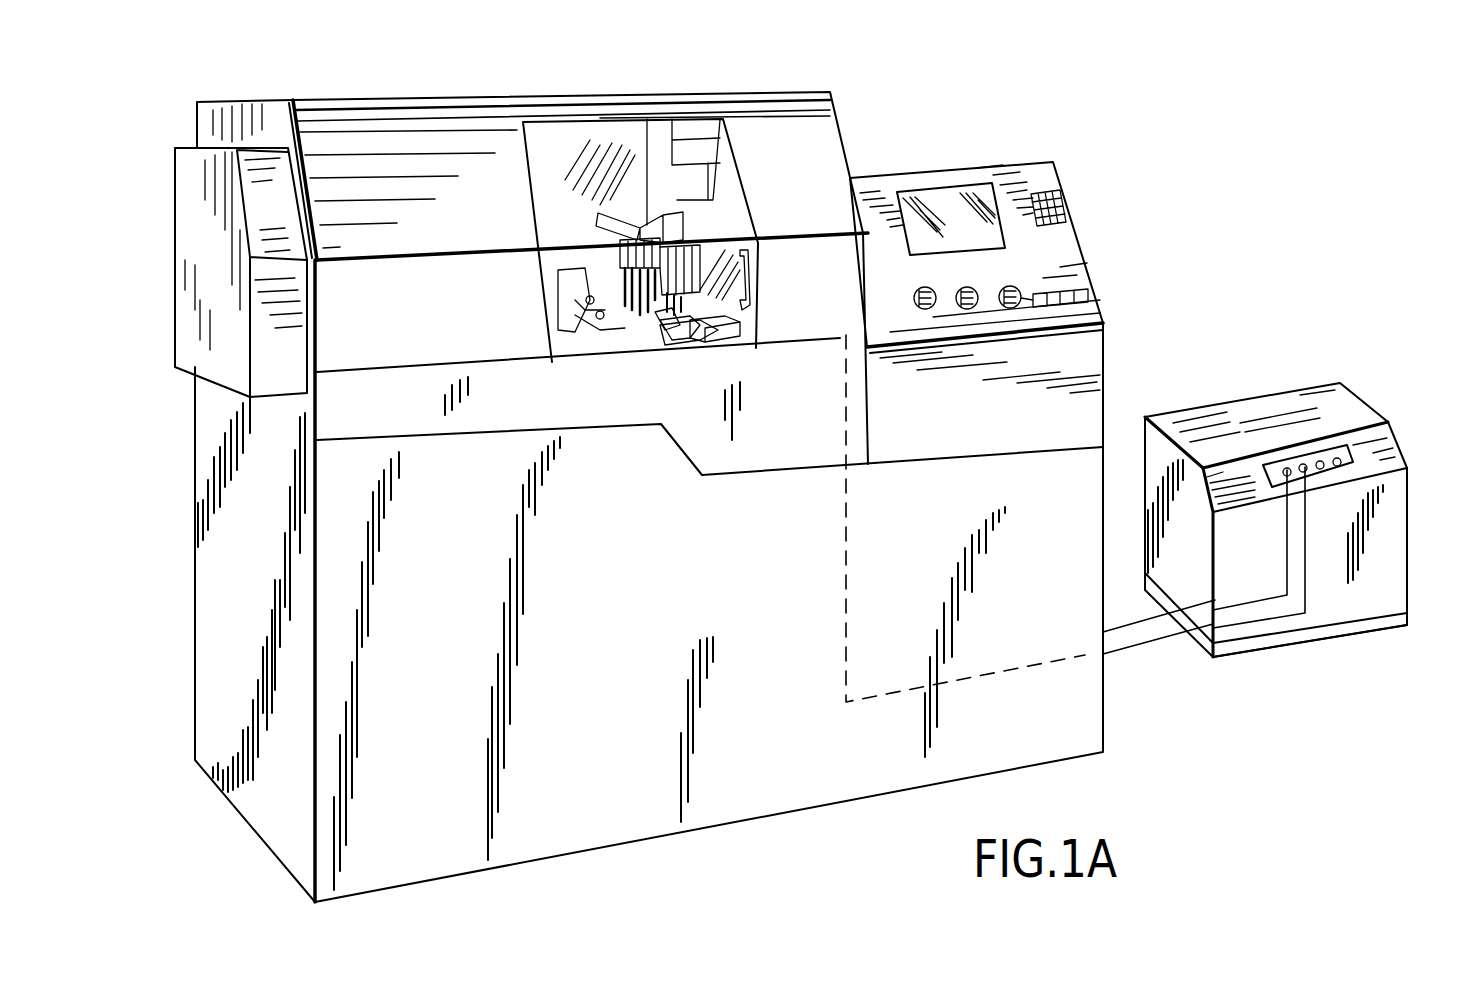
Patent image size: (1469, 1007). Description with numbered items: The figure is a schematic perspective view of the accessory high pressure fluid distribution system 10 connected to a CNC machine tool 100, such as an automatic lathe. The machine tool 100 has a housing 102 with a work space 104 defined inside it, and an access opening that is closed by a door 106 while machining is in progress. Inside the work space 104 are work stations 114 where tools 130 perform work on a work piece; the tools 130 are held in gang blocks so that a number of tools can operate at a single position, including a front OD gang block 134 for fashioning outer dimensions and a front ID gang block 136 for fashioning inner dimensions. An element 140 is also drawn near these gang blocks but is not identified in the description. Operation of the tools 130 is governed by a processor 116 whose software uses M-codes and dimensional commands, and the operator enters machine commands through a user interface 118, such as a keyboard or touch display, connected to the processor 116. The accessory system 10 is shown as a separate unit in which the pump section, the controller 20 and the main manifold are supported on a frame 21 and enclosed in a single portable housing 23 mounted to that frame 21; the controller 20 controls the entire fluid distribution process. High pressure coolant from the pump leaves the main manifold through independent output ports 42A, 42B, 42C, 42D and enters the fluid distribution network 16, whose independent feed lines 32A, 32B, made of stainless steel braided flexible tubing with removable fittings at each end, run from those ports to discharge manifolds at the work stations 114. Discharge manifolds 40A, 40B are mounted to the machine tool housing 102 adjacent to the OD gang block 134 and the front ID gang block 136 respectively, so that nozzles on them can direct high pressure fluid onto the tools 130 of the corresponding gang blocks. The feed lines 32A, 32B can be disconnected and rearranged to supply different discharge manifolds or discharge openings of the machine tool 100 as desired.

The CNC machine tool 100 is at (203, 587).
The housing 102 is at (409, 113).
The work space 104 is at (552, 170).
The door 106 is at (718, 178).
The feed line 32A is at (620, 245).
The feed line 32B is at (850, 510).
The discharge manifold 40A is at (665, 243).
The front OD gang block 134 is at (697, 263).
The work station 114 is at (590, 234).
The tools 130 is at (612, 318).
The reagent station 140 is at (663, 313).
The front ID gang block 136 is at (660, 325).
The discharge manifold 40B is at (690, 342).
The user interface 118 is at (953, 197).
The processor 116 is at (1018, 265).
The accessory high pressure fluid distribution system 10 is at (1226, 376).
The controller 20 is at (1286, 430).
The output port 42A is at (1284, 470).
The output port 42B is at (1305, 464).
The output port 42C is at (1323, 460).
The output port 42D is at (1347, 457).
The portable housing 23 is at (1397, 500).
The frame 21 is at (1320, 628).
The fluid distribution network 16 is at (1172, 652).